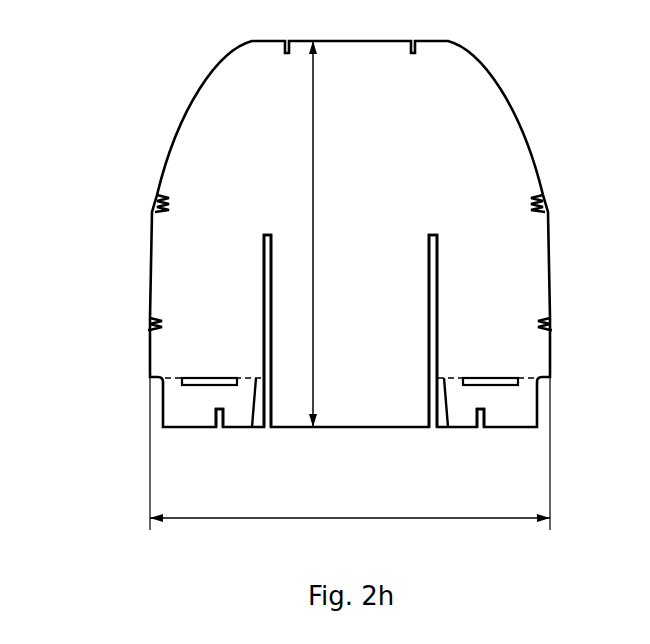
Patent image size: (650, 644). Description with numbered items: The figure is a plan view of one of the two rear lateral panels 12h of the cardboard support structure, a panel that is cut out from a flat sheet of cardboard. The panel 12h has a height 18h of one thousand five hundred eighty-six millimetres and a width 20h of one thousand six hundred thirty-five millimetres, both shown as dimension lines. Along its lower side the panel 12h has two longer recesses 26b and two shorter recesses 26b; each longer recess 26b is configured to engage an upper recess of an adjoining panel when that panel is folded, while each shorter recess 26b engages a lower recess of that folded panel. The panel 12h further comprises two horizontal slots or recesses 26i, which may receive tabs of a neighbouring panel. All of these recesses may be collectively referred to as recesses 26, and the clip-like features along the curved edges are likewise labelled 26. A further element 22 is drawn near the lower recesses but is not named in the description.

The rear lateral panel 12h is at (95, 78).
The height 18h is at (338, 234).
The width 20h is at (350, 454).
The inner wall / partition 22 is at (252, 430).
The recesses 26 is at (284, 54).
The recesses 26b is at (264, 250).
The horizontal slots 26i is at (208, 378).